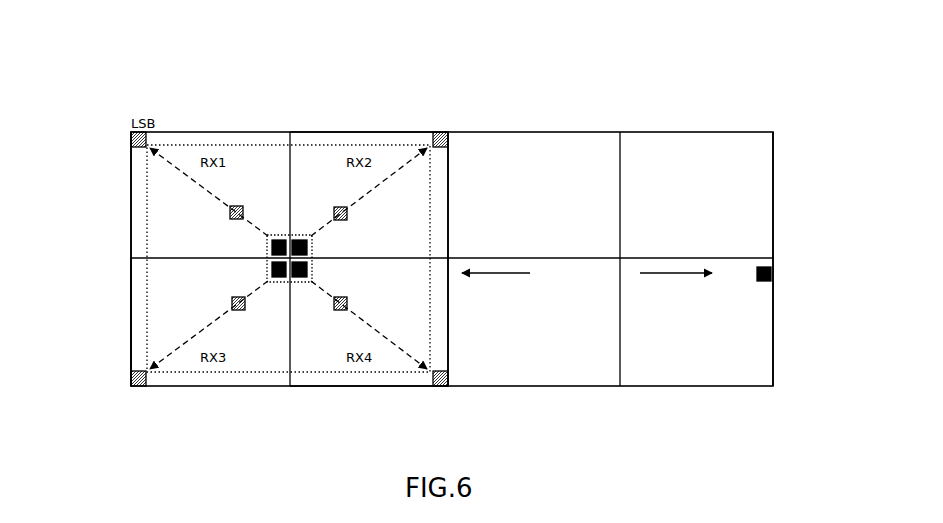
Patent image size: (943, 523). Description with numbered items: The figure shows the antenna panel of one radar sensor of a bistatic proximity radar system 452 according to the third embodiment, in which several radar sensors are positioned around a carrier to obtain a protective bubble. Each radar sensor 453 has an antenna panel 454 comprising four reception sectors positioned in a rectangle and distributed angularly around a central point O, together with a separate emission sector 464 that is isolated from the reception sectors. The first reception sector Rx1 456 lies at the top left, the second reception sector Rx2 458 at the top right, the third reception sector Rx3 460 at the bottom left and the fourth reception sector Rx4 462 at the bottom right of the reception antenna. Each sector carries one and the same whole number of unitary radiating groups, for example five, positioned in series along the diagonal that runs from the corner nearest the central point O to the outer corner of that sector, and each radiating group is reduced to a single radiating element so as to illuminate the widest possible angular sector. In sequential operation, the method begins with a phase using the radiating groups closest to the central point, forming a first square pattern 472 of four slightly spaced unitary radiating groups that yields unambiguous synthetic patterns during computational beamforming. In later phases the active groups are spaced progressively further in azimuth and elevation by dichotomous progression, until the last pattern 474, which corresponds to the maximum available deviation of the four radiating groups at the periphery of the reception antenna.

The proximity radar system 452 is at (92, 45).
The radar sensor 453 is at (211, 112).
The antenna panel 454 is at (468, 132).
The first reception sector Rx1 456 is at (131, 175).
The second reception sector Rx2 458 is at (350, 132).
The third reception sector Rx3 460 is at (131, 318).
The fourth reception sector Rx4 462 is at (346, 387).
The emission sector 464 is at (773, 320).
The first square pattern 472 is at (263, 269).
The last pattern 474 is at (195, 373).